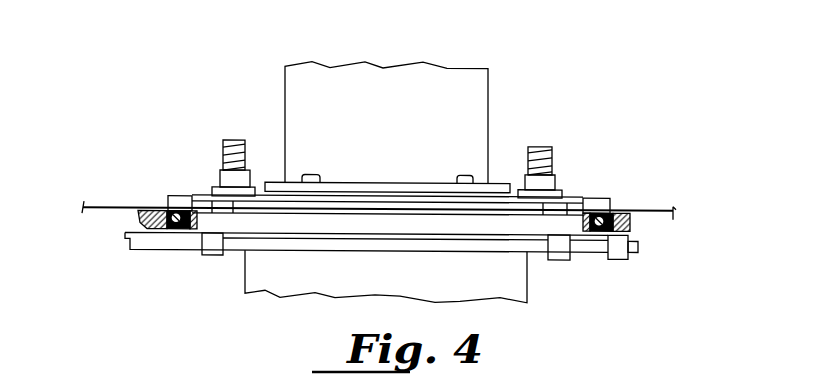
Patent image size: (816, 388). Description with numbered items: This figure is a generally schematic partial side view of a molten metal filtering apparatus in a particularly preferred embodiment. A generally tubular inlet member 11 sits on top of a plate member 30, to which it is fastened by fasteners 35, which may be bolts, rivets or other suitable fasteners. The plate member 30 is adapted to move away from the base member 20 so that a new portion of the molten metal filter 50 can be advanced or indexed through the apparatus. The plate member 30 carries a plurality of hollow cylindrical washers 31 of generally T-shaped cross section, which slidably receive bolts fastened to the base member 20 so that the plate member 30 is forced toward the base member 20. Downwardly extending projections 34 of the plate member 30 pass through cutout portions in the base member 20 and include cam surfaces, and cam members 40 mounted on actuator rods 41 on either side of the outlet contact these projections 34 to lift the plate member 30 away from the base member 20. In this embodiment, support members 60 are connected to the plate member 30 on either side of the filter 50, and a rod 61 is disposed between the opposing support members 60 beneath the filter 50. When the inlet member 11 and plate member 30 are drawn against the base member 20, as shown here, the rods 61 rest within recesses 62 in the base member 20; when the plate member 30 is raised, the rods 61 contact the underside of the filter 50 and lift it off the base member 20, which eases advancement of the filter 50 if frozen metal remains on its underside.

The inlet member 11 is at (315, 92).
The base member 20 is at (632, 223).
The plate member 30 is at (495, 192).
The hollow cylindrical washers 31 is at (240, 180).
The downwardly extending projections 34 is at (213, 205).
The fasteners 35 is at (318, 176).
The cam members 40 is at (214, 250).
The actuator rods 41 is at (538, 250).
The molten metal filter 50 is at (108, 212).
The support members 60 is at (178, 197).
The rod 61 is at (178, 226).
The recesses 62 is at (175, 226).